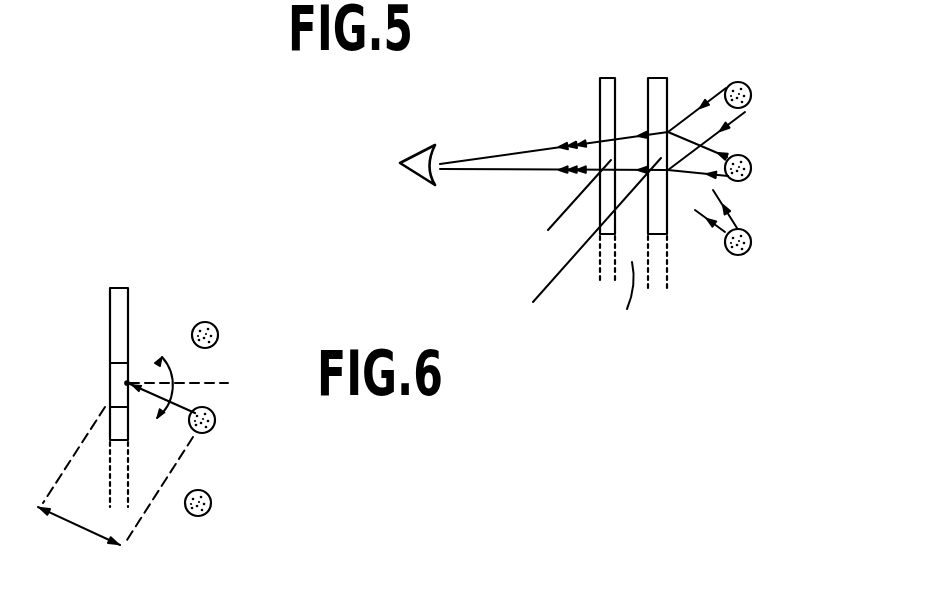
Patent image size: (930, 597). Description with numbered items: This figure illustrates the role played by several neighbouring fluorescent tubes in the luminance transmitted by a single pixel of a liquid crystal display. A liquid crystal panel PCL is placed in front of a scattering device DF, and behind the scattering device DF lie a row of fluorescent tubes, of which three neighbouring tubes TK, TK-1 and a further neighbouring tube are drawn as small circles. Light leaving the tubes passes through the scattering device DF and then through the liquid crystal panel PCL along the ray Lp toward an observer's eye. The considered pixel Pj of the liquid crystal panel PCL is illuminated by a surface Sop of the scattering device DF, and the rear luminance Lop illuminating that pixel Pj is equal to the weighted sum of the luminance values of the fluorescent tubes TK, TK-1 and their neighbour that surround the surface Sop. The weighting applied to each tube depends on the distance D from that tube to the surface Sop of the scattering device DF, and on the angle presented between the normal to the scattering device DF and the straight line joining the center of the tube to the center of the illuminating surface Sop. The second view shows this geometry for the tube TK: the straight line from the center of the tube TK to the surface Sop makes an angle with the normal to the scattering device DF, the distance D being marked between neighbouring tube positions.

In FIG. 5, the liquid crystal panel PCL is at (601, 79).
In FIG. 5, the scattering device DF is at (659, 78).
In FIG. 6, the scattering device DF is at (118, 285).
In FIG. 5, the light ray to observer's eye Lp is at (554, 139).
In FIG. 5, the pixel Pj is at (548, 230).
In FIG. 5, the surface of the scattering device Sop is at (533, 302).
In FIG. 6, the surface of the scattering device Sop is at (115, 383).
In FIG. 5, the rear luminance Lop is at (633, 304).
In FIG. 5, the fluorescent tube TK-1 is at (737, 82).
In FIG. 5, the fluorescent tube TK is at (751, 167).
In FIG. 6, the fluorescent tube TK is at (193, 408).
In FIG. 6, the distance D is at (115, 479).